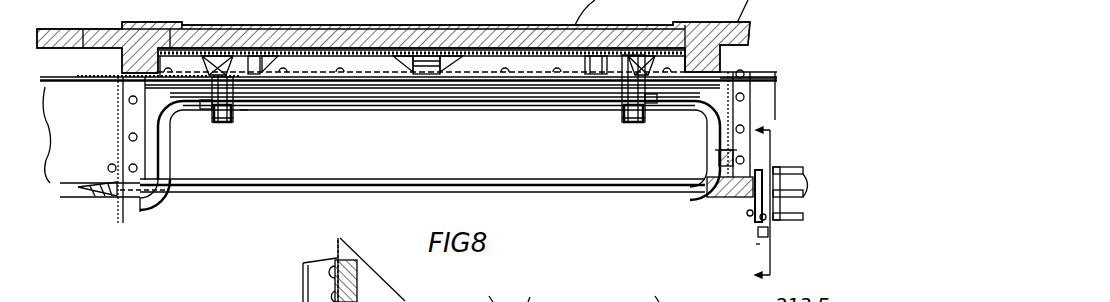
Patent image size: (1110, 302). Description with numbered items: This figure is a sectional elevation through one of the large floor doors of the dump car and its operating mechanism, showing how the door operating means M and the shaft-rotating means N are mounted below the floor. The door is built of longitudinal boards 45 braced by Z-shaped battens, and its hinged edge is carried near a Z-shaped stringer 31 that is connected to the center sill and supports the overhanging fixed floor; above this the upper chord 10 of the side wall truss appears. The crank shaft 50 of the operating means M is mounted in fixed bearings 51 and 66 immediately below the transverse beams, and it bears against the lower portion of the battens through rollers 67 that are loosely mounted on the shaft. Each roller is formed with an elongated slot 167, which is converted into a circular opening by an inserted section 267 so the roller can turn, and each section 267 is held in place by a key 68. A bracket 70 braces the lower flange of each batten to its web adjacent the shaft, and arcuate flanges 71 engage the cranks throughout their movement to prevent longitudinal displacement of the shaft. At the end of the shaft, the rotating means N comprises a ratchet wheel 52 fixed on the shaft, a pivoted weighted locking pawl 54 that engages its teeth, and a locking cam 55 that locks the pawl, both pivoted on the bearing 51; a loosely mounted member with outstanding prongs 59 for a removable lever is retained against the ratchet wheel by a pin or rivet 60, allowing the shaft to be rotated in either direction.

The upper chord 10 is at (778, 200).
The stringer 31 is at (540, 62).
The boards 45 is at (562, 292).
The crank shaft 50 is at (463, 100).
The fixed bearing 51 is at (790, 180).
The ratchet wheel 52 is at (757, 216).
The locking pawl 54 is at (765, 221).
The locking cam 55 is at (763, 186).
The fulcrums or prongs 59 is at (805, 198).
The pin or rivet 60 is at (244, 113).
The fixed bearing 66 is at (135, 213).
The rollers 67 is at (216, 124).
The key 68 is at (198, 110).
The bracket 70 is at (213, 65).
The arcuate flanges 71 is at (720, 205).
The elongated slots 167 is at (547, 292).
The section 267 is at (212, 126).
The door operating means M is at (703, 163).
The shaft-rotating means N is at (757, 245).